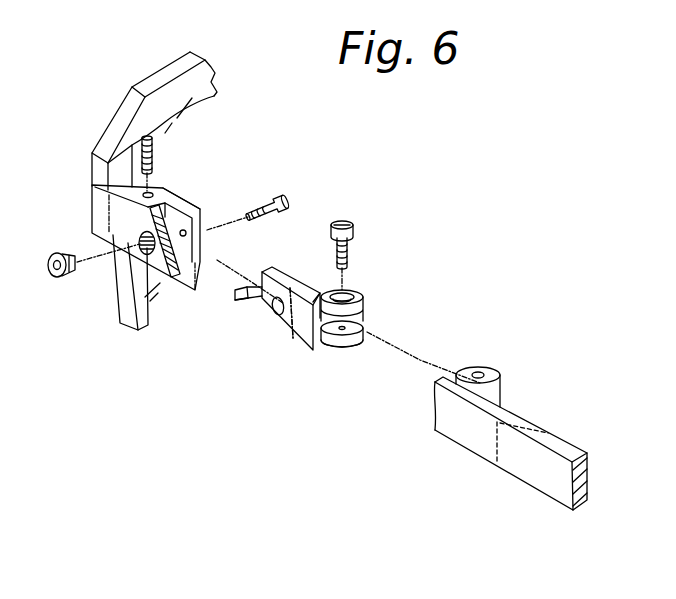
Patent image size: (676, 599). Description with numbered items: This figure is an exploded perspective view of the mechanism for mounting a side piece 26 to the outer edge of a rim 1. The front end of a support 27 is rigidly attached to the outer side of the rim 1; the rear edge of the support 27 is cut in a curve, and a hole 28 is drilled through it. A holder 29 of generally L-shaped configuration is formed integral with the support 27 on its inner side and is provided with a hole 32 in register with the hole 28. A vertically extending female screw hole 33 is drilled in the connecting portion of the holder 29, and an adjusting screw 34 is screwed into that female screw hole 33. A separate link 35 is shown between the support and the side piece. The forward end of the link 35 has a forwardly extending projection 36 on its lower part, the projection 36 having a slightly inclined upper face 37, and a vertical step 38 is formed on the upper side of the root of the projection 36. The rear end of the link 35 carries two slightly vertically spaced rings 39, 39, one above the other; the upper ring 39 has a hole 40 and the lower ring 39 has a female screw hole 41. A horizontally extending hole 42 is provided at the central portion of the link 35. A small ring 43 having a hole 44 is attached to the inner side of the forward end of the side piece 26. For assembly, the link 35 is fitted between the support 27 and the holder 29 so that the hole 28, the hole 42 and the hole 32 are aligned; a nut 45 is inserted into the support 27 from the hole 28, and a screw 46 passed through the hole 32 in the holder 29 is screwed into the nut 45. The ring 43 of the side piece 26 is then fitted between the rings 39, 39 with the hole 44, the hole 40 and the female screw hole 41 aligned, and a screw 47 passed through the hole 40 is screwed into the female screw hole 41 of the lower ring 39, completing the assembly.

The rim 1 is at (122, 112).
The side piece 26 is at (555, 436).
The support 27 is at (93, 198).
The hole 28 is at (140, 250).
The holder 29 is at (183, 200).
The hole 32 is at (211, 220).
The female screw hole 33 is at (153, 191).
The adjusting screw 34 is at (132, 147).
The link 35 is at (292, 283).
The projection 36 is at (250, 302).
The upper face 37 is at (242, 290).
The vertical step 38 is at (268, 313).
The ring 39 is at (365, 302).
The hole 40 is at (357, 287).
The female screw hole 41 is at (363, 343).
The hole 42 is at (280, 317).
The small ring 43 is at (503, 386).
The hole 44 is at (483, 363).
The nut 45 is at (60, 252).
The screw 46 is at (290, 203).
The screw 47 is at (353, 232).